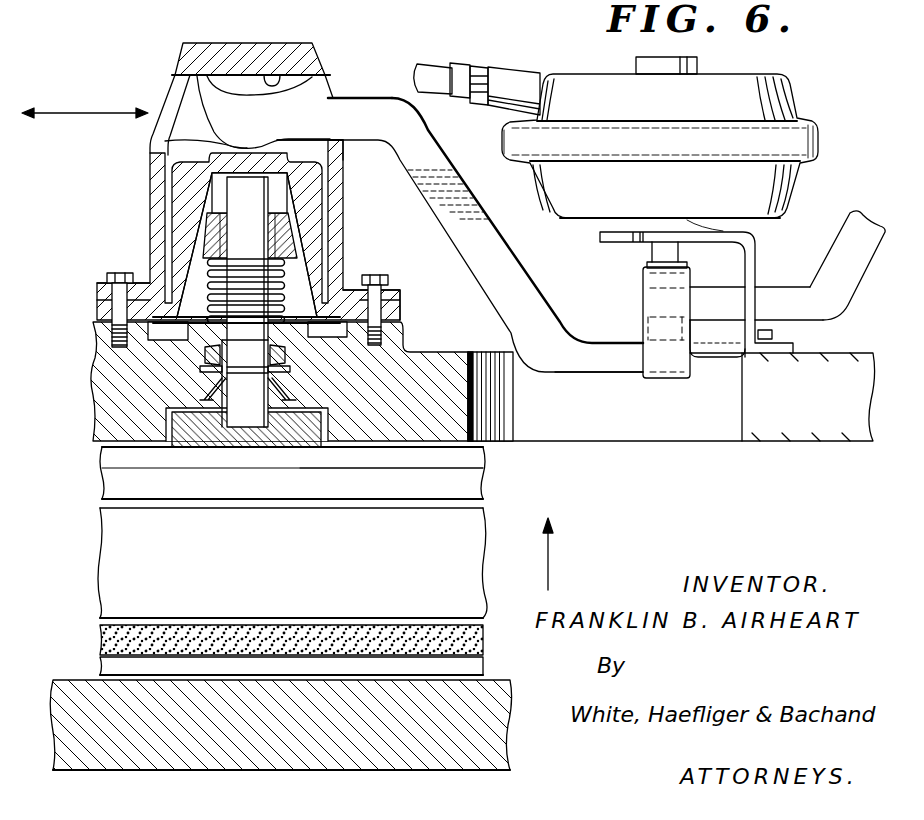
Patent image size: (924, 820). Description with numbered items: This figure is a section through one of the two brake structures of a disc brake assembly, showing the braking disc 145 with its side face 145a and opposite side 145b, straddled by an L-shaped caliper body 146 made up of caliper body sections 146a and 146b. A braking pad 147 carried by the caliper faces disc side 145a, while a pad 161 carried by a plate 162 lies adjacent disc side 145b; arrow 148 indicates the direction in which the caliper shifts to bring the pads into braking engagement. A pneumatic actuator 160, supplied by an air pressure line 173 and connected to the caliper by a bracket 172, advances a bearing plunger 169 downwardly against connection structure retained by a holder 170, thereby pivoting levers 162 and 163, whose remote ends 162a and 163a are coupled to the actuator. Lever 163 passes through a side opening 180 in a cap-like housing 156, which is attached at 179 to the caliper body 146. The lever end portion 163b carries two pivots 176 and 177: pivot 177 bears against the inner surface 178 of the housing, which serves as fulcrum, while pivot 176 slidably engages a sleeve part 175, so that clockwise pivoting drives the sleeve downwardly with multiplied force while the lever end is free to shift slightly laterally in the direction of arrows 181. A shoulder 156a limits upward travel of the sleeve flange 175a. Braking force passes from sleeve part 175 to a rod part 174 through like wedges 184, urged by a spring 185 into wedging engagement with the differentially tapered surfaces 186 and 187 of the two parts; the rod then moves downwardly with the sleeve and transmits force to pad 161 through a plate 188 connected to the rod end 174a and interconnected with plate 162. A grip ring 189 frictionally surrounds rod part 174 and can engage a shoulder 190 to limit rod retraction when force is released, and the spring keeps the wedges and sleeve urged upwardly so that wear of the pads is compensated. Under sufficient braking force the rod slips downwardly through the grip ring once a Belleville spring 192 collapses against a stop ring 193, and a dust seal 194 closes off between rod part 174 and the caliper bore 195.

The braking disc 145 is at (292, 563).
The disc side face 145a is at (353, 625).
The disc side 145b is at (380, 508).
The caliper body 146 is at (804, 447).
The caliper body section 146a is at (490, 763).
The caliper body section 146b is at (466, 418).
The braking pad 147 is at (467, 644).
The arrow 148 is at (556, 552).
The cap-like housing 156 is at (158, 60).
The shoulder 156a is at (333, 308).
The actuator 160 is at (806, 95).
The pad 161 is at (483, 487).
The plate 162 is at (847, 277).
The lever end 162a is at (722, 298).
The lever 163 is at (497, 263).
The lever end 163a is at (625, 356).
The lever end portion 163b is at (258, 120).
The bearing plunger 169 is at (662, 253).
The holder 170 is at (653, 300).
The bracket 172 is at (752, 248).
The air pressure line 173 is at (433, 75).
The rod part 174 is at (275, 243).
The rod part end 174a is at (267, 421).
The sleeve part 175 is at (158, 180).
The sleeve flange 175a is at (163, 312).
The pivot 176 is at (233, 147).
The pivot 177 is at (213, 80).
The inner surface 178 is at (281, 77).
The attachment 179 is at (118, 308).
The side opening 180 is at (338, 155).
The arrows 181 is at (80, 109).
The wedges 184 is at (207, 223).
The spring 185 is at (283, 283).
The differentially tapered surface 186 is at (225, 245).
The differentially tapered surface 187 is at (213, 200).
The plate 188 is at (307, 428).
The grip ring 189 is at (286, 352).
The shoulder 190 is at (207, 352).
The Belleville spring 192 is at (290, 368).
The stop ring 193 is at (289, 383).
The dust seal 194 is at (210, 385).
The caliper bore 195 is at (213, 418).